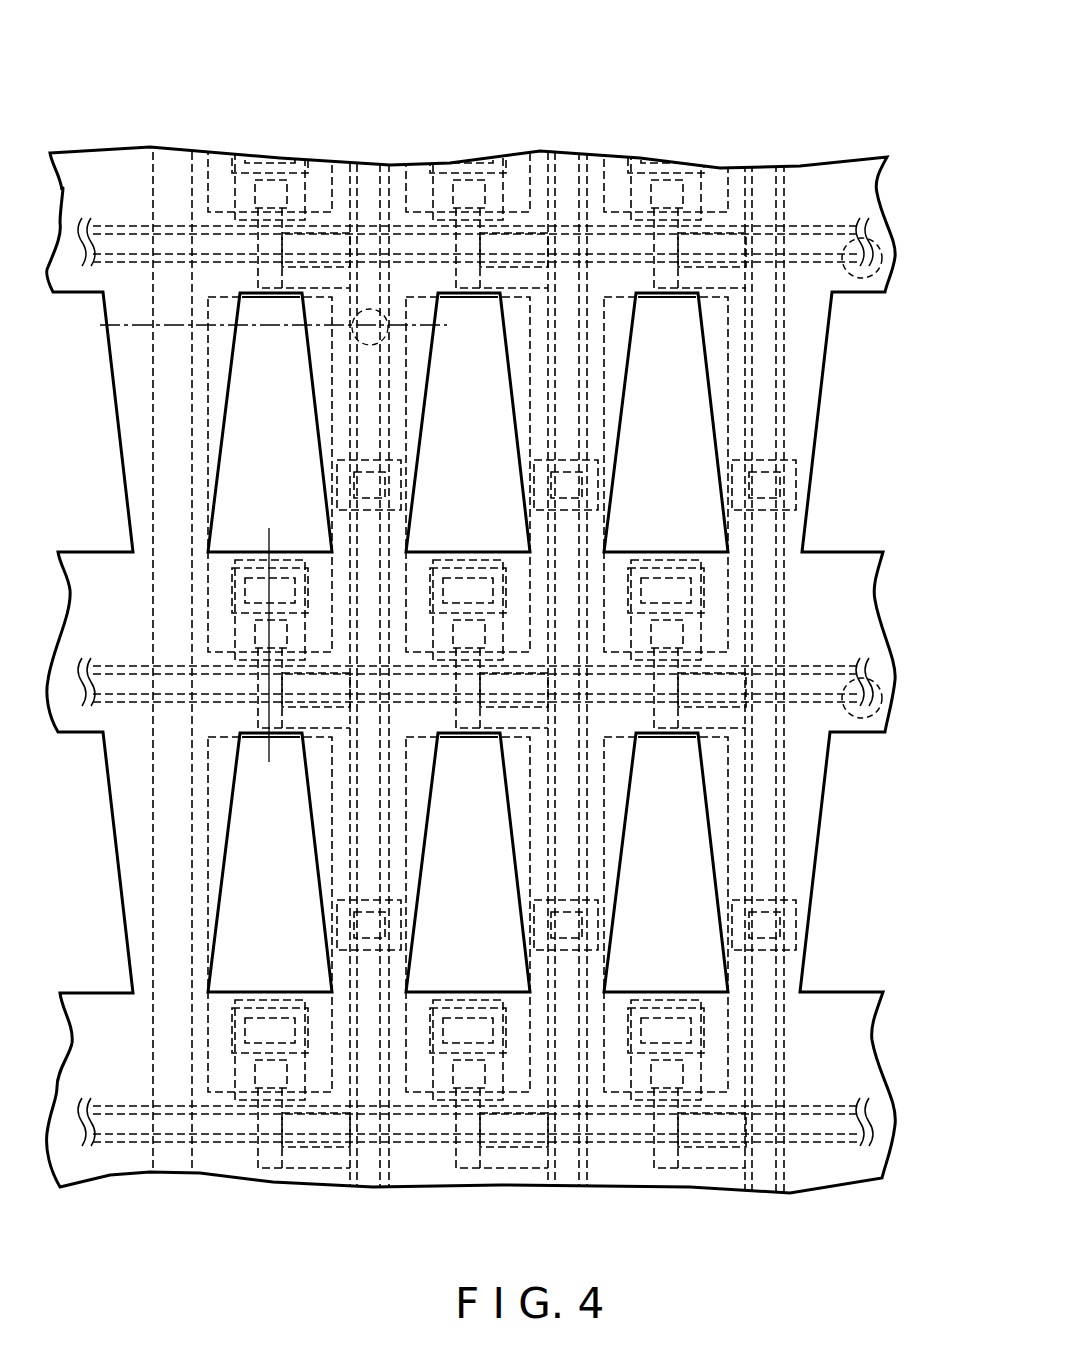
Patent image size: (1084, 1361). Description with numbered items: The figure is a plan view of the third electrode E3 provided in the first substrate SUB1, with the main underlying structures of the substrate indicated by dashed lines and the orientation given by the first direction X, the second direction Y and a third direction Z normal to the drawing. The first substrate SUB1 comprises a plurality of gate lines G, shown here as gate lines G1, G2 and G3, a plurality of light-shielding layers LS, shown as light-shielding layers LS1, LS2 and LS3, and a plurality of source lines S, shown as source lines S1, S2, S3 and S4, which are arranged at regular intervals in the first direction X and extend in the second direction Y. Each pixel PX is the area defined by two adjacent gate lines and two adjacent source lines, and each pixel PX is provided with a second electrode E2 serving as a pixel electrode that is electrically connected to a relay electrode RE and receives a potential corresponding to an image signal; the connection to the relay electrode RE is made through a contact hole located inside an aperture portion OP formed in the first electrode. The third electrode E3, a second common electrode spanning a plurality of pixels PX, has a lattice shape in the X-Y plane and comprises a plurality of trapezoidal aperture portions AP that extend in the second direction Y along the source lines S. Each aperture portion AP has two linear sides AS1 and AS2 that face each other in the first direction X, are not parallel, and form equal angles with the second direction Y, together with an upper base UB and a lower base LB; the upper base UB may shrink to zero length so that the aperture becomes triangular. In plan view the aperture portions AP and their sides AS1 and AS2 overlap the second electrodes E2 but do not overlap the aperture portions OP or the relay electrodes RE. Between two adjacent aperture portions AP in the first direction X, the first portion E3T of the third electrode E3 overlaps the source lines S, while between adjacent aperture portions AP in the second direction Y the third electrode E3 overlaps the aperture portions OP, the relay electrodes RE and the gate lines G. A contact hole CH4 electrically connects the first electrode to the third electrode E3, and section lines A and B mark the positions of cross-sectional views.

The first substrate SUB1 is at (507, 654).
The third electrode E3 is at (878, 600).
The first portion E3T is at (375, 443).
The second electrode E2 is at (202, 423).
The aperture portion AP is at (205, 486).
The pixel PX is at (215, 278).
The upper base UB is at (299, 290).
The lower base LB is at (223, 556).
The side AS1 is at (234, 370).
The side AS2 is at (322, 463).
The aperture portion OP is at (237, 590).
The relay electrode RE is at (237, 652).
The contact hole CH4 is at (378, 352).
The gate line G is at (522, 693).
The gate line G1 is at (884, 250).
The gate line G2 is at (884, 690).
The gate line G3 is at (847, 1128).
The light-shielding layer LS is at (901, 673).
The light-shielding layer LS1 is at (868, 278).
The light-shielding layer LS2 is at (868, 718).
The light-shielding layer LS3 is at (835, 1108).
The source line S is at (471, 696).
The source line S1 is at (171, 1172).
The source line S2 is at (369, 1180).
The source line S3 is at (566, 1178).
The source line S4 is at (763, 1192).
The section line A-A' A is at (85, 336).
The section line B-B' B is at (260, 537).
The first direction X is at (86, 23).
The second direction Y is at (75, 33).
The Z axis Z is at (63, 25).